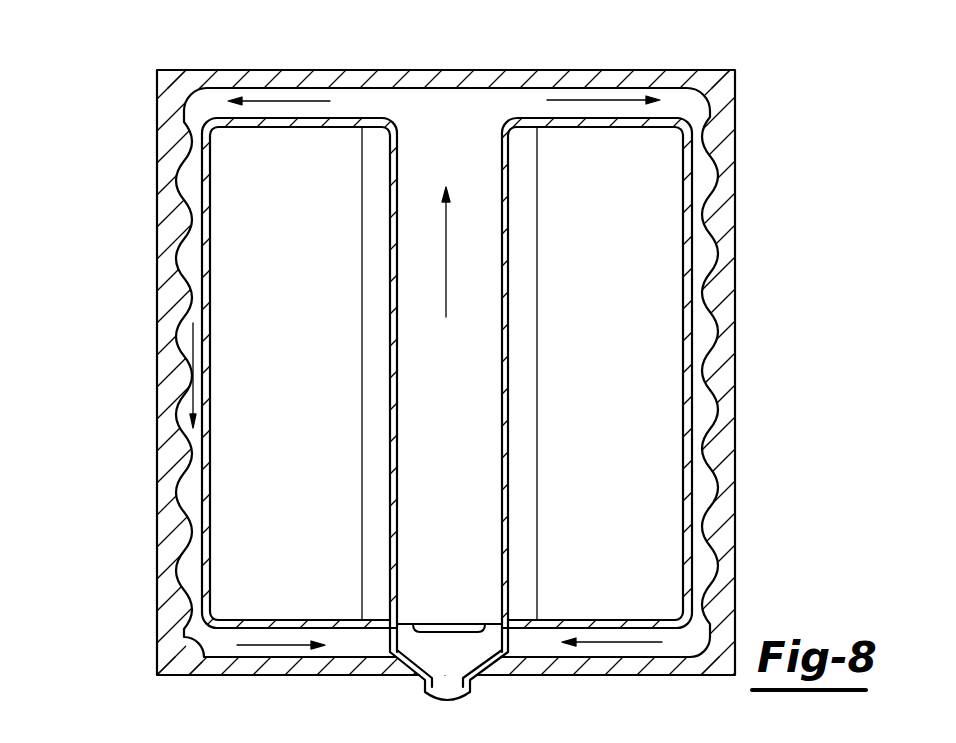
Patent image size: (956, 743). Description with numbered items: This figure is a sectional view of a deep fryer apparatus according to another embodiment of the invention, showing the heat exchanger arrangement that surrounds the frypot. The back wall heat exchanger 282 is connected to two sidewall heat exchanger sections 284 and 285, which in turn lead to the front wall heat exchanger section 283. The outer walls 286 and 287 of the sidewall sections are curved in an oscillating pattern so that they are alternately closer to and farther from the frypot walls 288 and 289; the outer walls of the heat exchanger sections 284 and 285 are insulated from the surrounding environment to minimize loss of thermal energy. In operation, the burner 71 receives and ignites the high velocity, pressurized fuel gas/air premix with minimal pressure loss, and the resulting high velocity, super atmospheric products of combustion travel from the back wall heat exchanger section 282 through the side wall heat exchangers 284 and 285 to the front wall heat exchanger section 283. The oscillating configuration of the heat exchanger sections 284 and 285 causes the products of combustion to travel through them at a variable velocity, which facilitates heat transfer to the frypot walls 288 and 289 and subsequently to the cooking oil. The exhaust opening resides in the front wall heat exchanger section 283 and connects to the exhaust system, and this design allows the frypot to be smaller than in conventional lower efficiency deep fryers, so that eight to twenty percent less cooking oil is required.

The back wall heat exchanger 282 is at (457, 108).
The front wall heat exchanger section 283 is at (353, 645).
The sidewall heat exchanger section 284 is at (180, 198).
The sidewall heat exchanger section 285 is at (708, 276).
The outer wall 286 is at (177, 340).
The outer wall 287 is at (722, 370).
The frypot wall 288 is at (208, 483).
The frypot wall 289 is at (695, 475).
The burner 71 is at (446, 618).